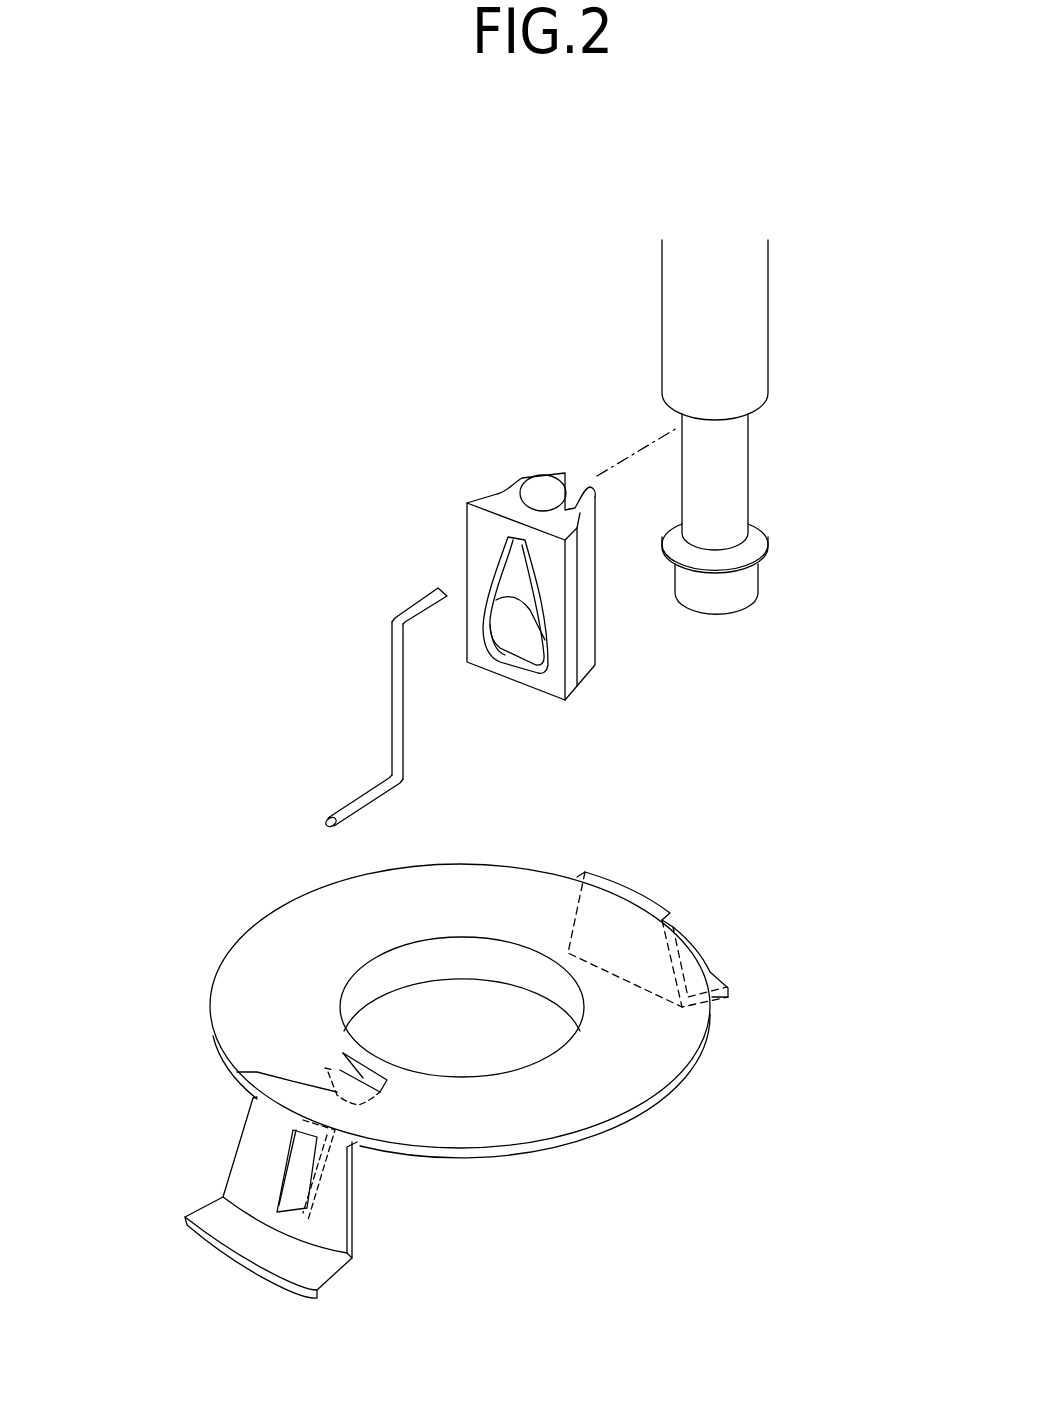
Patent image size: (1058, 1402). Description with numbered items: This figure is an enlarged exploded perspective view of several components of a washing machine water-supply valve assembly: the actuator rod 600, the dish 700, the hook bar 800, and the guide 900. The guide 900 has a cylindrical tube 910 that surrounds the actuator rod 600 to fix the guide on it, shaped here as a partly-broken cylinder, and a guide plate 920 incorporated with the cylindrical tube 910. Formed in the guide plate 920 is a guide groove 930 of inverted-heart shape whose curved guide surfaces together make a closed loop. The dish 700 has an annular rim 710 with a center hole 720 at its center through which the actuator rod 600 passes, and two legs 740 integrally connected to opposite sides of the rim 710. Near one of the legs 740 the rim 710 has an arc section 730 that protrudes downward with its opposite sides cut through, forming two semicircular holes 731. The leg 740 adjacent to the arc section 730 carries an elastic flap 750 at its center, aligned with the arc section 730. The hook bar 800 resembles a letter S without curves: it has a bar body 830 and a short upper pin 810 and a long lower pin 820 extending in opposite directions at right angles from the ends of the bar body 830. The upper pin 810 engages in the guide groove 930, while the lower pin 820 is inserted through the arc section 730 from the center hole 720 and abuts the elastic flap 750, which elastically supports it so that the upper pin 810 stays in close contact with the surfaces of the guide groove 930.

The actuator rod 600 is at (750, 362).
The dish 700 is at (423, 1095).
The annular rim 710 is at (473, 1118).
The center hole 720 is at (528, 1023).
The arc section 730 is at (237, 1072).
The semicircular holes 731 is at (343, 1073).
The legs 740 is at (228, 1237).
The elastic flap 750 is at (302, 1169).
The hook bar 800 is at (328, 702).
The upper pin 810 is at (395, 622).
The lower pin 820 is at (358, 798).
The bar body 830 is at (395, 752).
The guide 900 is at (493, 569).
The cylindrical tube 910 is at (532, 416).
The guide plate 920 is at (573, 612).
The guide groove 930 is at (508, 645).